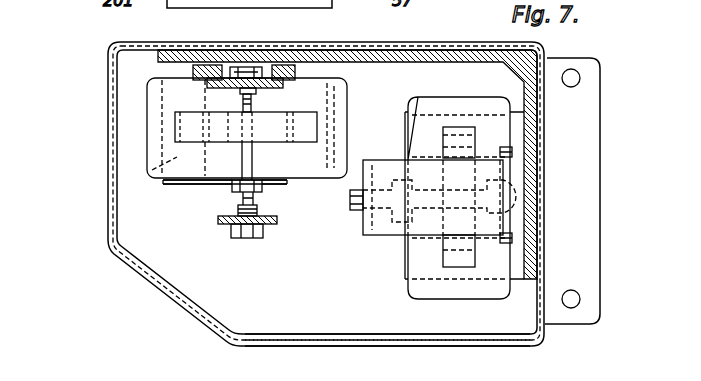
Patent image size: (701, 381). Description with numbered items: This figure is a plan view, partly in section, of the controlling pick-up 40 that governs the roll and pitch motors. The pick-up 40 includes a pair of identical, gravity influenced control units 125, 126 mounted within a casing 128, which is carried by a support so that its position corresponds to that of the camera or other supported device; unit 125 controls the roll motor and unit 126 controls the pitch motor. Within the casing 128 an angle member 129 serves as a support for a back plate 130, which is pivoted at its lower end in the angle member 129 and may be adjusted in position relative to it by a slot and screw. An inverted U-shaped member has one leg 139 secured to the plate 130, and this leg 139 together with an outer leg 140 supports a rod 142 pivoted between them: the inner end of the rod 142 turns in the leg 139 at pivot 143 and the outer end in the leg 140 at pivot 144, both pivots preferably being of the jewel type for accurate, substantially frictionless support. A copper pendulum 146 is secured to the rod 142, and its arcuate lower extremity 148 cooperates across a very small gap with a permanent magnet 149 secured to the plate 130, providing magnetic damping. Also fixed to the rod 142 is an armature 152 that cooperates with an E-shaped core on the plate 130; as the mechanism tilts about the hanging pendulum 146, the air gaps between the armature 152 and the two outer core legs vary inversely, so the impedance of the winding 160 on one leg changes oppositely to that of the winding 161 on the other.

The controlling pick-up 40 is at (103, 106).
The control unit 125 is at (205, 187).
The control unit 126 is at (385, 243).
The casing 128 is at (300, 341).
The angle member 129 is at (403, 58).
The back plate 130 is at (317, 70).
The leg 139 is at (283, 82).
The outer leg 140 is at (262, 218).
The rod 142 is at (262, 182).
The pivot 143 is at (252, 90).
The pivot 144 is at (232, 198).
The pendulum 146 is at (256, 196).
The lower extremity 148 is at (191, 196).
The permanent magnet 149 is at (348, 140).
The armature 152 is at (277, 134).
The winding 160 is at (152, 98).
The winding 161 is at (332, 102).